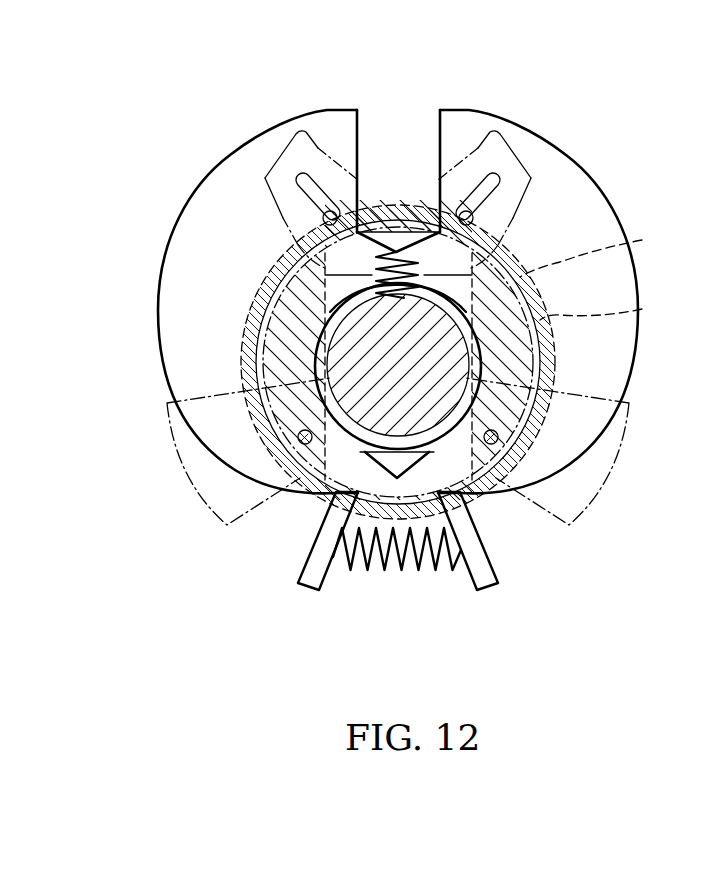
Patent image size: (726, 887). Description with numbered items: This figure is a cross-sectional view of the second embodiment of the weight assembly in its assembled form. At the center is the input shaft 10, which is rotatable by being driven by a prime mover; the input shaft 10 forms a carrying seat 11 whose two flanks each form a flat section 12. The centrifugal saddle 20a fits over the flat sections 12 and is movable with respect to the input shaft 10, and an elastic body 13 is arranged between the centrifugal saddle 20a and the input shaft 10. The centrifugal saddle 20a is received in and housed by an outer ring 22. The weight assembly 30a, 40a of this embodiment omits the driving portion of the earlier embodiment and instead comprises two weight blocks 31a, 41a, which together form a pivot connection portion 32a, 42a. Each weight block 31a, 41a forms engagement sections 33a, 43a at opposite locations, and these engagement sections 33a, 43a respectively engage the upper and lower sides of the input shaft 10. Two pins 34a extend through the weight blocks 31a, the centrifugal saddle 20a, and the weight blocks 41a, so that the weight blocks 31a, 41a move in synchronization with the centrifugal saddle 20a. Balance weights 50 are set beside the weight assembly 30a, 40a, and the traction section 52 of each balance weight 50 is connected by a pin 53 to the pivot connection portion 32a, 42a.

The weight assembly 30a is at (407, 265).
The weight assembly 40a is at (540, 121).
The weight block 31a is at (404, 246).
The weight block 41a is at (313, 122).
The engagement section 33a is at (398, 355).
The engagement section 43a is at (418, 278).
The pivot connection portion 32a is at (502, 219).
The pivot connection portion 42a is at (490, 195).
The traction section 52 is at (438, 155).
The pin 53 is at (446, 214).
The outer ring 22 is at (641, 247).
The centrifugal saddle 20a is at (643, 309).
The elastic body 13 is at (340, 270).
The carrying seat 11 is at (340, 312).
The input shaft 10 is at (328, 332).
The flat section 12 is at (352, 355).
The pin 34a is at (282, 475).
The balance weight 50 is at (590, 482).